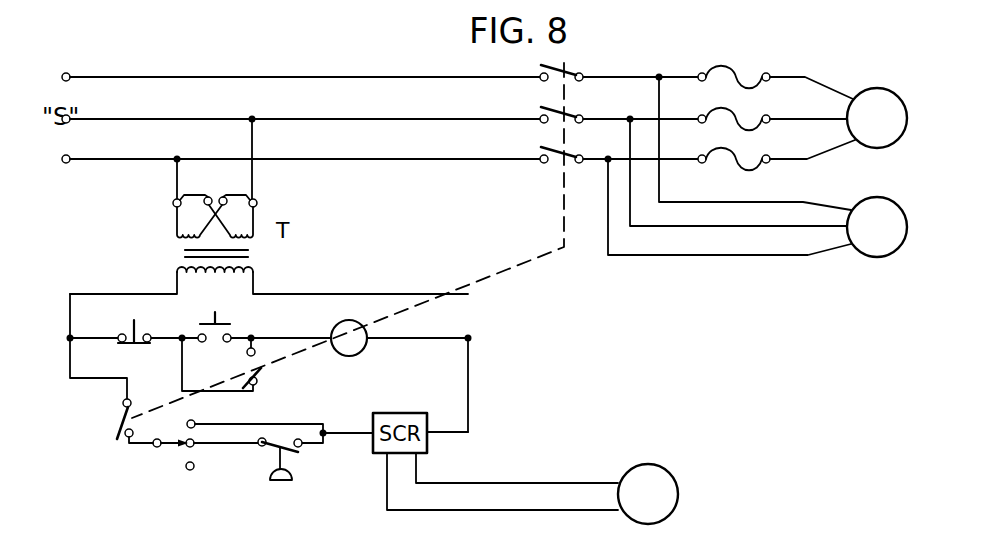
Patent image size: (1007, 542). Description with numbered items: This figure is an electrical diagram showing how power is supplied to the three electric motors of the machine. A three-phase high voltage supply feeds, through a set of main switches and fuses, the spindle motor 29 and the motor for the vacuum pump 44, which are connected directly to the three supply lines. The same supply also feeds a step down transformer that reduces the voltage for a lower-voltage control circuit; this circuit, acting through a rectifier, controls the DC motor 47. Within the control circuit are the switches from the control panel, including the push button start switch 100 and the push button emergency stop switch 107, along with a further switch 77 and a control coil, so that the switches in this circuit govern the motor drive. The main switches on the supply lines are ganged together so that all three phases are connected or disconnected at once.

The spindle motor 29 is at (883, 88).
The vacuum pump 44 is at (883, 258).
The DC motor 47 is at (678, 495).
The switch 77 is at (272, 450).
The push button start switch 100 is at (231, 322).
The push button emergency stop switch 107 is at (127, 346).